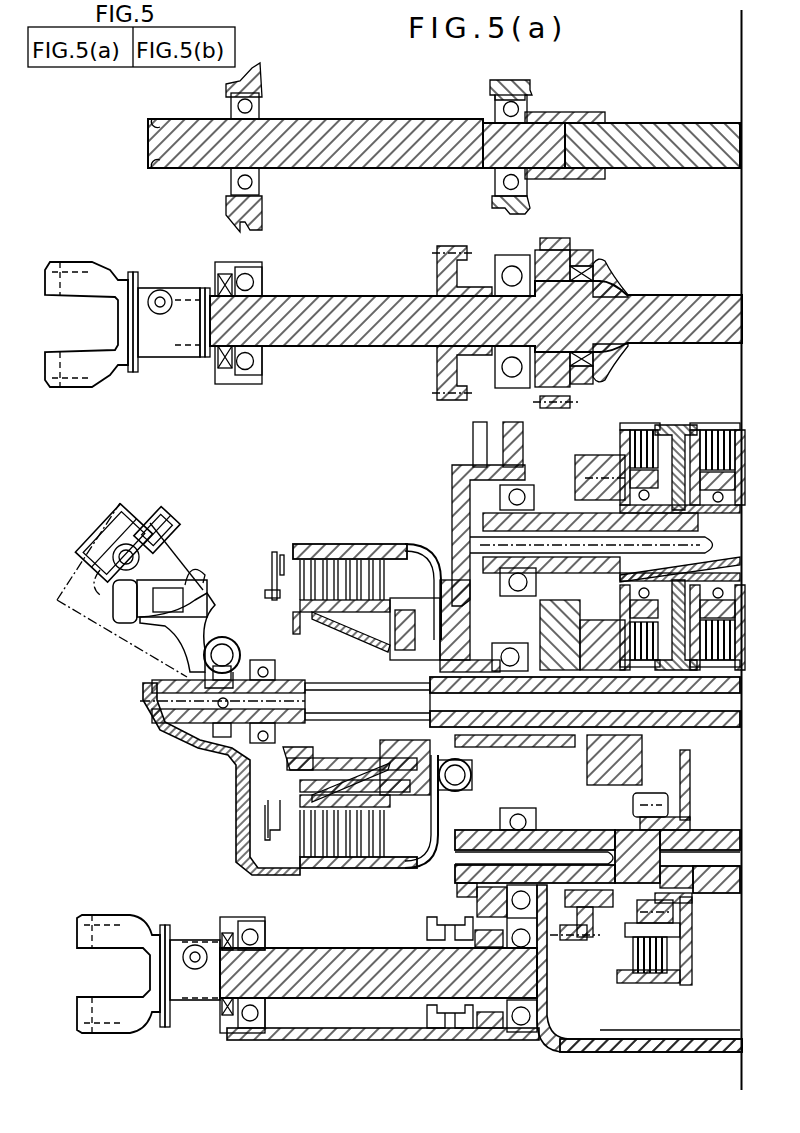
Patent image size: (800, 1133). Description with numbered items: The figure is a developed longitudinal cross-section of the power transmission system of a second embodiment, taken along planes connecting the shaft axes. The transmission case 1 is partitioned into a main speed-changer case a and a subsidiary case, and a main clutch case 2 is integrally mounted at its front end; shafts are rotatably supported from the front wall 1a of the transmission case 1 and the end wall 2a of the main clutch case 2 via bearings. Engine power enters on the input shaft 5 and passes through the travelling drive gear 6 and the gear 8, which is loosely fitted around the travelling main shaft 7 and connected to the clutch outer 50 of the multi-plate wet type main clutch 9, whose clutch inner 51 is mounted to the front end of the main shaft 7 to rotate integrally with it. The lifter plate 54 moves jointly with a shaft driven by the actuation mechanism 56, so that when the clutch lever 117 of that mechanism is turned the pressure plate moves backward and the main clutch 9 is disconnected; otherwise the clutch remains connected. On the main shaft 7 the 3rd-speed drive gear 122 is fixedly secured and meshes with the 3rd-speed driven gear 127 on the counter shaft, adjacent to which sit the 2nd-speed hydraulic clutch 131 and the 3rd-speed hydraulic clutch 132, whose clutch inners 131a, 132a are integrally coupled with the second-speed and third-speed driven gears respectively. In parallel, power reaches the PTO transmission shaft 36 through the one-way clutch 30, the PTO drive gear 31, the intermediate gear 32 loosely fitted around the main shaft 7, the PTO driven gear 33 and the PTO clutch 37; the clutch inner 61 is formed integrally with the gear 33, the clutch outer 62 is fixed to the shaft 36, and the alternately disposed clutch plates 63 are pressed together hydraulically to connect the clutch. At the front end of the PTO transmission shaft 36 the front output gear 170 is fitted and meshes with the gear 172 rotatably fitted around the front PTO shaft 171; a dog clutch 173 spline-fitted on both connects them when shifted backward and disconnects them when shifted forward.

The transmission case 1 is at (722, 1052).
The front wall of the transmission case 1a is at (528, 90).
The main clutch case 2 is at (343, 1041).
The end wall of the main clutch case 2a is at (262, 268).
The input shaft 5 is at (355, 296).
The travelling drive gear 6 is at (452, 398).
The travelling main shaft 7 is at (693, 742).
The gear 8 is at (448, 578).
The main clutch 9 is at (339, 524).
The one-way clutch 30 is at (604, 378).
The PTO drive gear 31 is at (565, 405).
The intermediate gear 32 is at (549, 600).
The PTO driven gear 33 is at (568, 936).
The PTO transmission shaft 36 is at (705, 884).
The PTO clutch 37 is at (682, 986).
The clutch outer 50 is at (392, 544).
The clutch inner 51 is at (356, 610).
The lifter plate 54 is at (312, 758).
The actuation mechanism 56 is at (219, 583).
The clutch inner of the PTO clutch 61 is at (620, 946).
The clutch outer of the PTO clutch 62 is at (692, 963).
The clutch plates 63 is at (656, 986).
The clutch lever 117 is at (167, 574).
The 3rd-speed drive gear 122 is at (685, 809).
The 3rd-speed driven gear 127 is at (596, 470).
The 2nd-speed hydraulic clutch 131 is at (712, 430).
The clutch inner of the 2nd-speed hydraulic clutch 131a is at (732, 425).
The 3rd-speed hydraulic clutch 132 is at (638, 430).
The clutch inner of the 3rd-speed hydraulic clutch 132a is at (627, 456).
The front output gear 170 is at (458, 858).
The front PTO shaft 171 is at (345, 963).
The gear 172 is at (493, 1030).
The dog clutch 173 is at (458, 1028).
The main speed-changer case a is at (675, 1039).